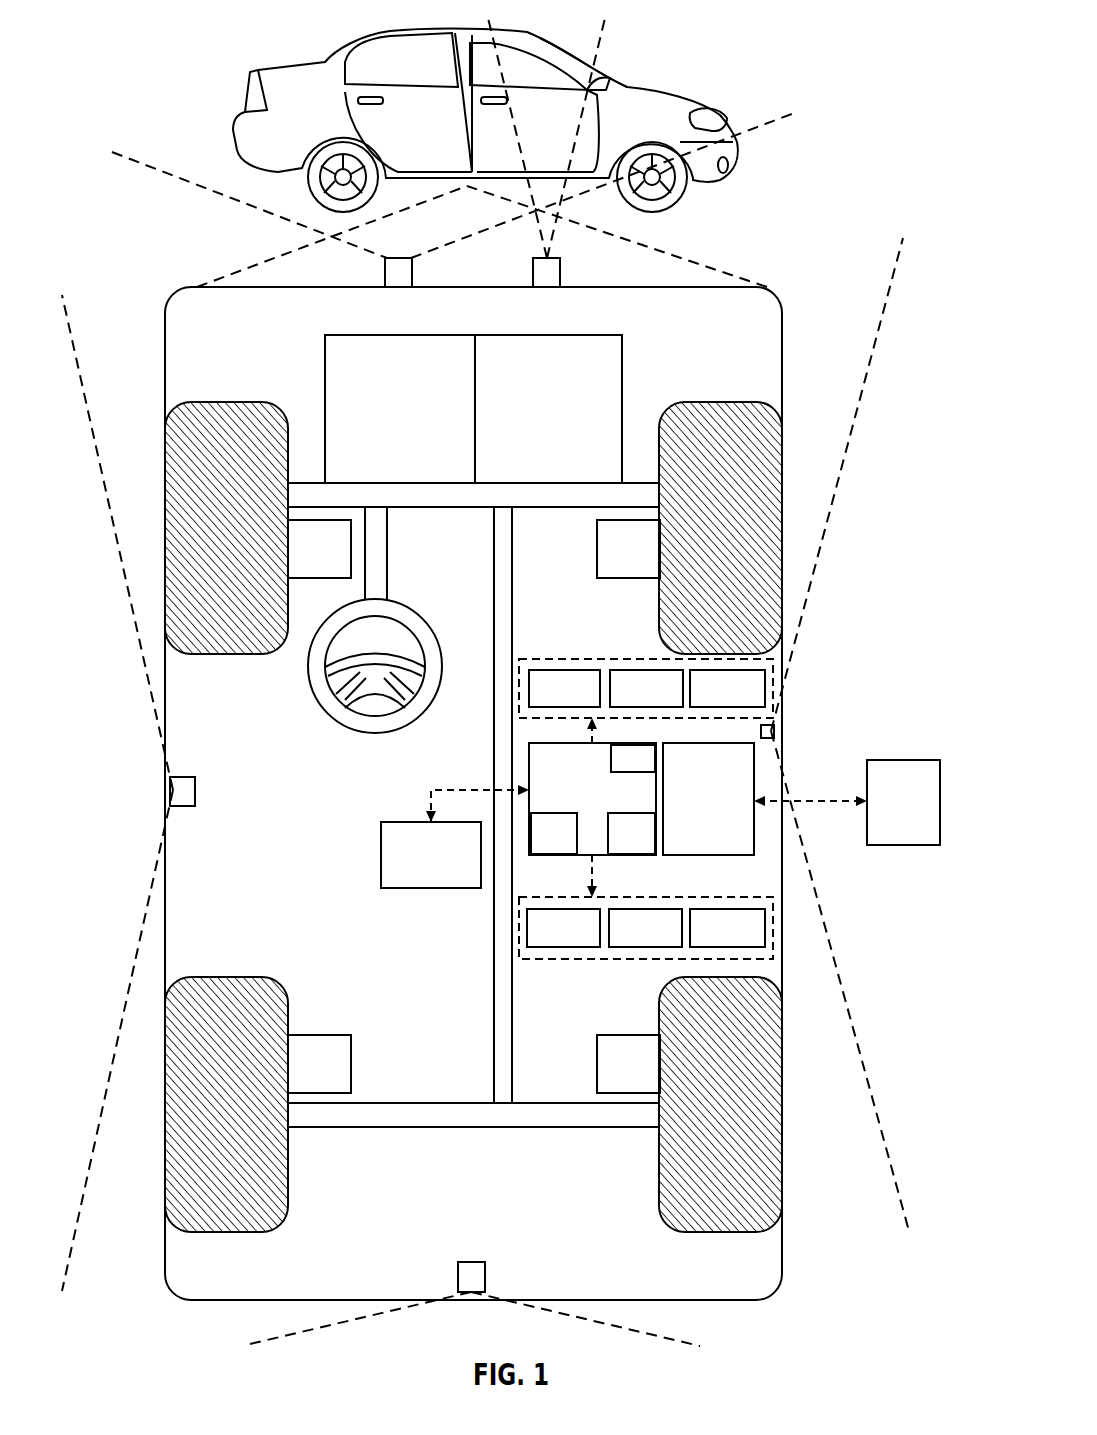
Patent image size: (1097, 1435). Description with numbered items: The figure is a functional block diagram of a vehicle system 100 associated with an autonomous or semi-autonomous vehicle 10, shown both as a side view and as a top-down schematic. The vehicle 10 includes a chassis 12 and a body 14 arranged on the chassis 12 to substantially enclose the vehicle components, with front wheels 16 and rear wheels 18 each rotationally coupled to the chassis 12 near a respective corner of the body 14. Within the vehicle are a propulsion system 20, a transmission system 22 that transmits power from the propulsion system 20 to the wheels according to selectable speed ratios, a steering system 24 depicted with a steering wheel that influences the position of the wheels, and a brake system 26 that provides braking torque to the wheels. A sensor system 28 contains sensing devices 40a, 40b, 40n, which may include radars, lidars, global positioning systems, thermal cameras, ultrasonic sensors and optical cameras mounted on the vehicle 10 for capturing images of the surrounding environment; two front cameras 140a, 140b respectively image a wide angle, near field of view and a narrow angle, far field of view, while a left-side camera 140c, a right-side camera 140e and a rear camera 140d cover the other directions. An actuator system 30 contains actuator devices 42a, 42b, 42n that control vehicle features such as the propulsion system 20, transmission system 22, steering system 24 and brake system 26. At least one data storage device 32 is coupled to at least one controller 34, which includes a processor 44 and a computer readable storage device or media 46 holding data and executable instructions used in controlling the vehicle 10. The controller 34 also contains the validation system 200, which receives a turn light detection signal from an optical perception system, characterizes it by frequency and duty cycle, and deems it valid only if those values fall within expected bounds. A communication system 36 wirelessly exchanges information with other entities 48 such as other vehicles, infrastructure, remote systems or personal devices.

The vehicle 10 is at (245, 106).
The chassis 12 is at (493, 961).
The body 14 is at (169, 789).
The front wheels 16 is at (226, 402).
The rear wheels 18 is at (227, 1233).
The propulsion system 20 is at (385, 422).
The transmission system 22 is at (533, 422).
The steering system 24 is at (393, 577).
The brake system 26 is at (304, 562).
The sensor system 28 is at (605, 658).
The actuator system 30 is at (611, 959).
The data storage device 32 is at (416, 868).
The controller 34 is at (575, 795).
The communication system 36 is at (693, 814).
The sensing device 40a is at (545, 702).
The sensing device 40b is at (627, 702).
The sensing device 40n is at (708, 702).
The actuator device 42a is at (545, 941).
The actuator device 42b is at (626, 941).
The actuator device 42n is at (708, 941).
The processor 44 is at (540, 847).
The computer readable storage device or media 46 is at (617, 847).
The other entities 48 is at (888, 815).
The vehicle system 100 is at (776, 250).
The front camera 140a is at (390, 274).
The front camera 140b is at (552, 276).
The left-side camera 140c is at (199, 791).
The rear camera 140d is at (472, 1262).
The right-side camera 140e is at (775, 734).
The validation system 200 is at (615, 771).